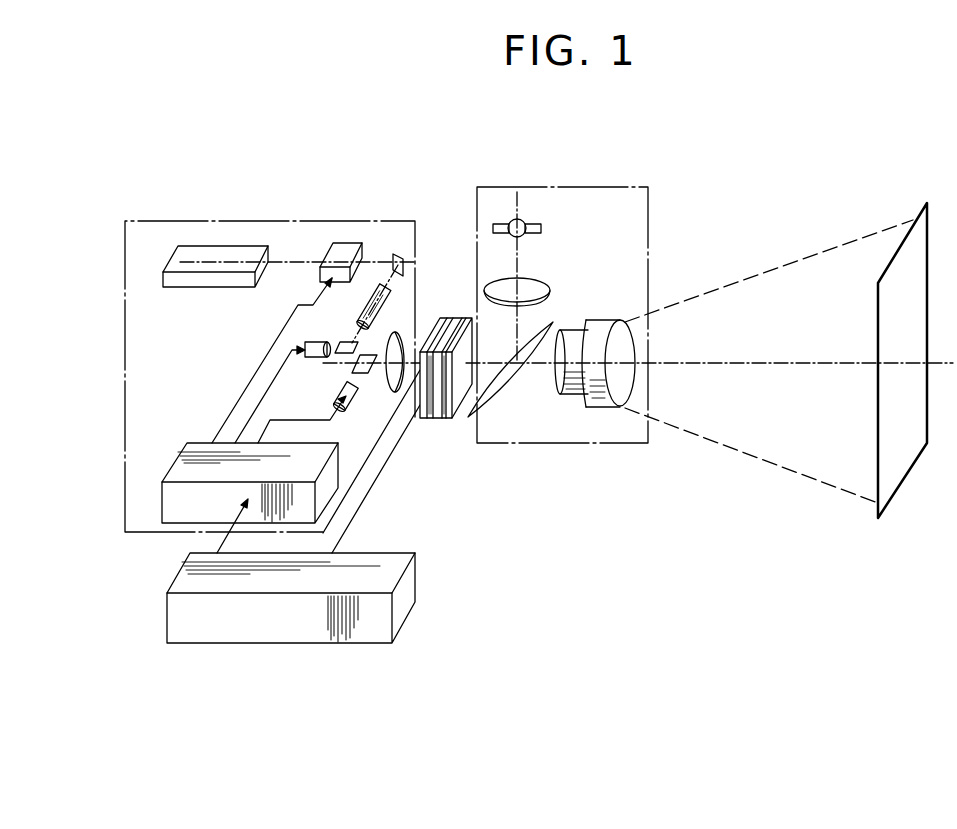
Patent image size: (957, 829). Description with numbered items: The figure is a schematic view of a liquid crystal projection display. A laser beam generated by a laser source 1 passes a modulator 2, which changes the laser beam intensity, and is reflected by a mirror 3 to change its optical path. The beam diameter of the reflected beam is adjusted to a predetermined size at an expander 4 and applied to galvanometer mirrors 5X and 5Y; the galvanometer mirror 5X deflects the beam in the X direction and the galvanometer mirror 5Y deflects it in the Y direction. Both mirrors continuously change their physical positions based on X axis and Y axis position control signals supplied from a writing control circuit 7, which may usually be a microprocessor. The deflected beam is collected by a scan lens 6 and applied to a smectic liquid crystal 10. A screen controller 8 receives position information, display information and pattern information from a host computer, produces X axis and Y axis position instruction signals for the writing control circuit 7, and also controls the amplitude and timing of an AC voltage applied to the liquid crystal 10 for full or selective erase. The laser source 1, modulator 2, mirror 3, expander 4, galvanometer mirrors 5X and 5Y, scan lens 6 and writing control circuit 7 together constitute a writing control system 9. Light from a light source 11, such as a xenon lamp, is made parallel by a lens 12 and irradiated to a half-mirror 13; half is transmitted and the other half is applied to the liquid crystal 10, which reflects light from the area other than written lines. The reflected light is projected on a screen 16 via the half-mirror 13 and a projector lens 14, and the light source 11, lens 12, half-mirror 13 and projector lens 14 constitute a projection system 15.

The laser source 1 is at (188, 245).
The modulator 2 is at (347, 243).
The mirror 3 is at (397, 253).
The expander 4 is at (367, 304).
The galvanometer mirror 5X is at (324, 342).
The galvanometer mirror 5Y is at (338, 397).
The scan lens 6 is at (398, 380).
The writing control circuit 7 is at (178, 462).
The screen controller 8 is at (182, 575).
The writing control system 9 is at (260, 221).
The smectic liquid crystal 10 is at (437, 420).
The light source 11 is at (508, 223).
The lens 12 is at (543, 292).
The half-mirror 13 is at (517, 370).
The projector lens 14 is at (608, 408).
The projection system 15 is at (575, 187).
The screen 16 is at (918, 215).